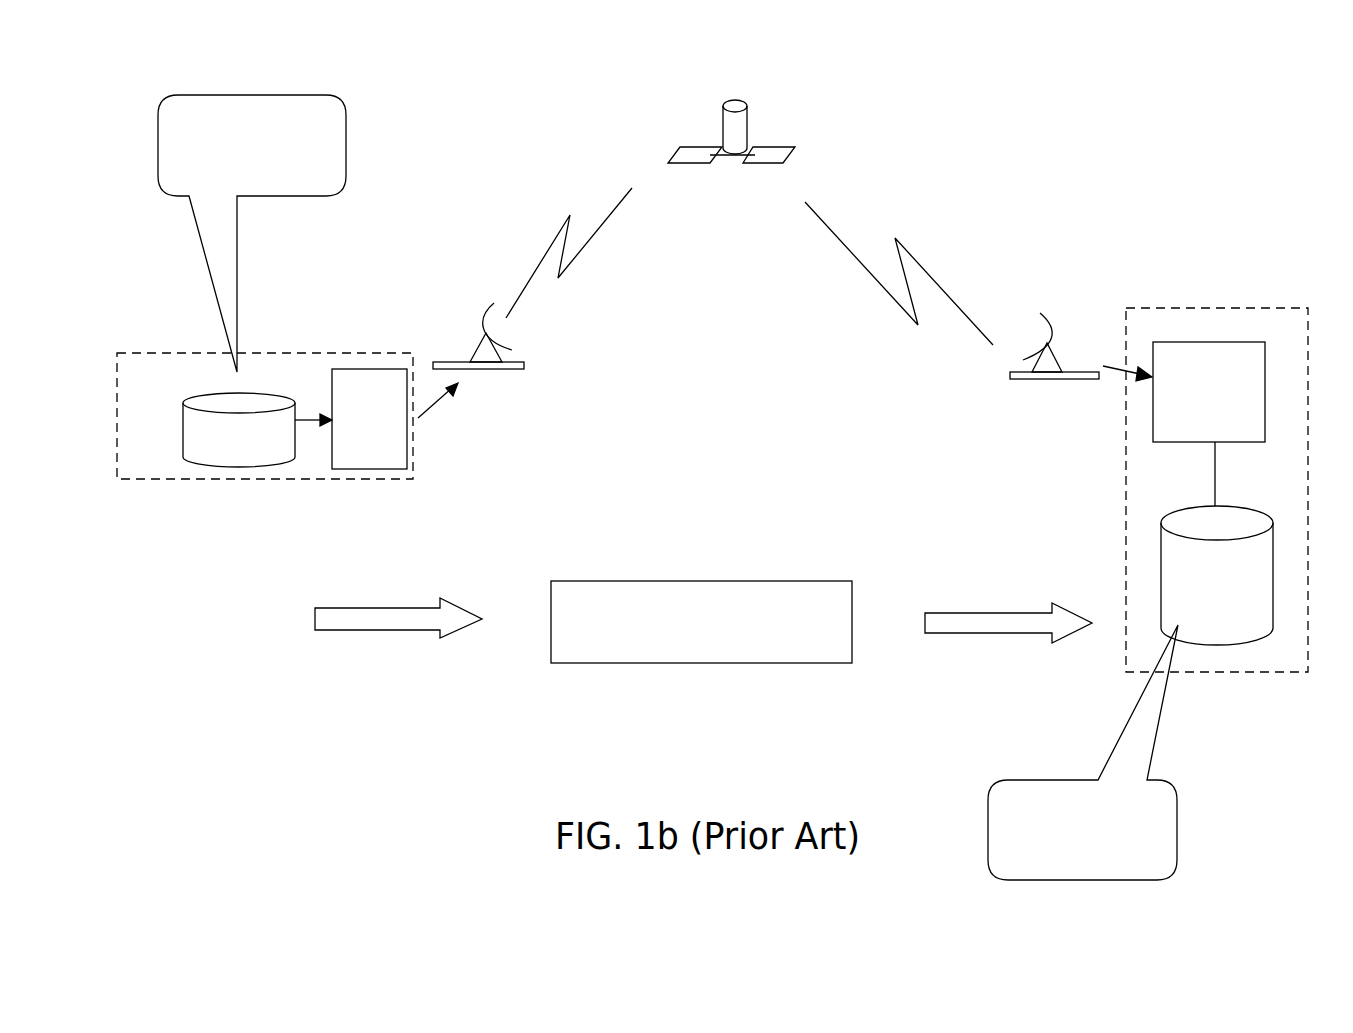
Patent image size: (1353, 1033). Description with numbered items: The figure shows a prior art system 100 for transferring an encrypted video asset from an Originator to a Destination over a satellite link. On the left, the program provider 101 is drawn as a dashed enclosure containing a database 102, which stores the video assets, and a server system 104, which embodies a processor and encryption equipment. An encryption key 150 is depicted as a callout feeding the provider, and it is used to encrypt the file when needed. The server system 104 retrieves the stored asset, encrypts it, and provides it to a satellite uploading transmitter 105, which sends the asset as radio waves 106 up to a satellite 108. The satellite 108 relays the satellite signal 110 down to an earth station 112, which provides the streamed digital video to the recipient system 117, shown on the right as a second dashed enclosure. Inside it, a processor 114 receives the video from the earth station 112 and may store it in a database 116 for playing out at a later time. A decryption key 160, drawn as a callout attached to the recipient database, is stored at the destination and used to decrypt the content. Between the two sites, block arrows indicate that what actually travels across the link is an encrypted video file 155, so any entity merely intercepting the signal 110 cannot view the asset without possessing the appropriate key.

The system 100 is at (490, 143).
The program provider 101 is at (250, 480).
The database 102 is at (183, 422).
The server system 104 is at (330, 368).
The satellite uploading transmitter 105 is at (473, 343).
The radio waves 106 is at (605, 220).
The satellite 108 is at (712, 108).
The satellite signal 110 is at (843, 242).
The earth station 112 is at (1055, 320).
The processor 114 is at (1223, 333).
The database 116 is at (1160, 569).
The recipient system 117 is at (1283, 672).
The encryption key 150 is at (232, 90).
The encrypted video file 155 is at (652, 580).
The decryption key 160 is at (1030, 775).